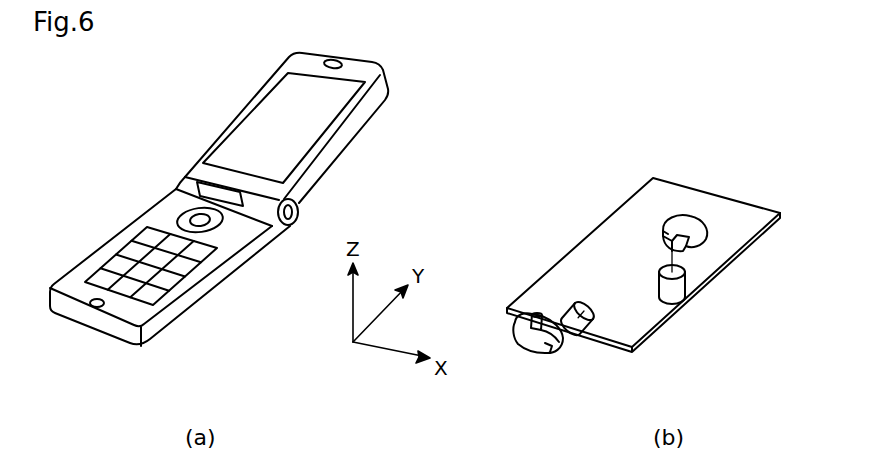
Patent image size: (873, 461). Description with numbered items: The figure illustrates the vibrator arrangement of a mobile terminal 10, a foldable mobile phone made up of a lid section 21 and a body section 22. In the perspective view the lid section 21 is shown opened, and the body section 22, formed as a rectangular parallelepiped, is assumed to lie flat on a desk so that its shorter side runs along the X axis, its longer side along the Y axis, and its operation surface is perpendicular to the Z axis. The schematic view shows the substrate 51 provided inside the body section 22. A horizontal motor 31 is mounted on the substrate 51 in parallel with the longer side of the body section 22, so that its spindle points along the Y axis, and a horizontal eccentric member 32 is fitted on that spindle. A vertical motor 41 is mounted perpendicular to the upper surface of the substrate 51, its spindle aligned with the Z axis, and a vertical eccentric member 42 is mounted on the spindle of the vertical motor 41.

The mobile terminal 10 is at (161, 151).
The lid section 21 is at (373, 112).
The body section 22 is at (213, 282).
The horizontal motor 31 is at (592, 335).
The horizontal eccentric member 32 is at (525, 352).
The vertical motor 41 is at (685, 282).
The vertical eccentric member 42 is at (705, 228).
The substrate 51 is at (768, 228).